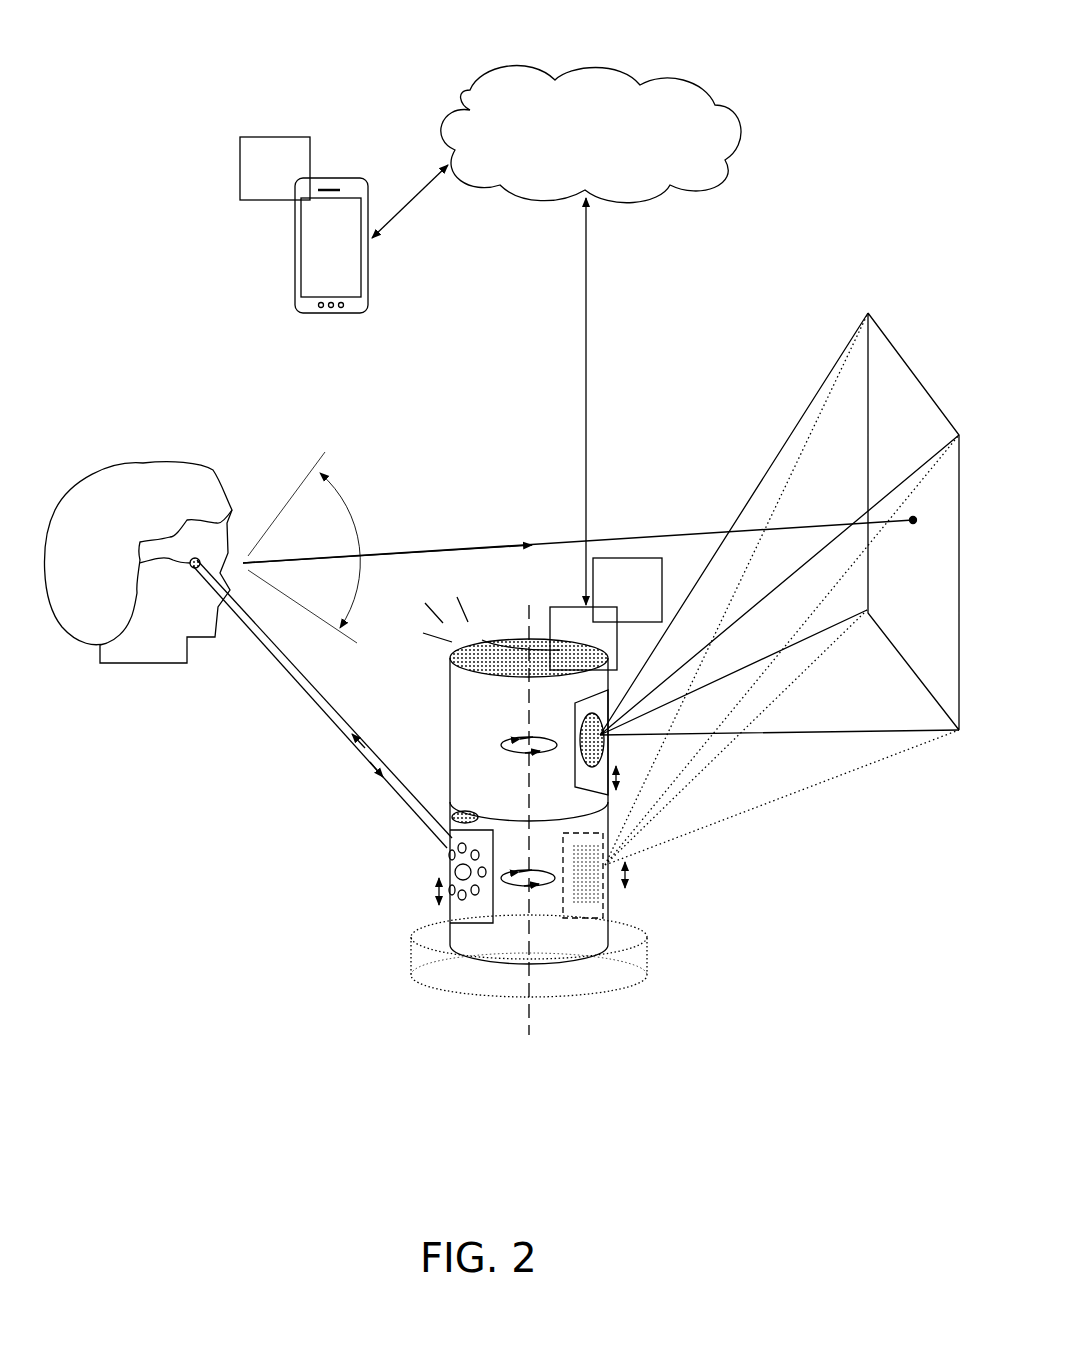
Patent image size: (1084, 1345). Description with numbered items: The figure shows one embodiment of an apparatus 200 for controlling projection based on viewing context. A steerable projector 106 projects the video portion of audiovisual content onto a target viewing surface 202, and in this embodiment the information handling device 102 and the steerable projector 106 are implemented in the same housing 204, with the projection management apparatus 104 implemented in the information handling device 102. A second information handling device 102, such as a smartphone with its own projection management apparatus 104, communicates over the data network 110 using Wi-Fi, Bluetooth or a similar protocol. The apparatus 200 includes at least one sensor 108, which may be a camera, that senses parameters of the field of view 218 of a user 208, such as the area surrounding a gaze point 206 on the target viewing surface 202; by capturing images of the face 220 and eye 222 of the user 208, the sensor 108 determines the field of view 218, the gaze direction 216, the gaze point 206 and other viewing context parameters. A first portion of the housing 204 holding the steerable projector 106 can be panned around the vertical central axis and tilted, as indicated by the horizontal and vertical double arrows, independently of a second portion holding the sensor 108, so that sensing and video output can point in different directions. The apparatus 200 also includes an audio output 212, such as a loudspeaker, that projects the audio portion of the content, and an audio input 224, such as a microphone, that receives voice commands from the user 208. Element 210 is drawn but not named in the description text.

The apparatus 200 is at (288, 82).
The information handling device 102 is at (292, 248).
The projection management apparatus 104 is at (451, 379).
The data network 110 is at (591, 134).
The target viewing surface 202 is at (915, 370).
The user 208 is at (140, 450).
The gaze direction 216 is at (516, 540).
The field of view 218 is at (327, 547).
The eye 222 is at (140, 580).
The face 220 is at (183, 612).
The audio output 212 is at (505, 645).
The steerable projector 106 is at (470, 722).
The gaze point 206 is at (915, 527).
The audio input 224 is at (450, 812).
The camera 210 is at (447, 850).
The sensor 108 is at (447, 865).
The housing 204 is at (688, 880).